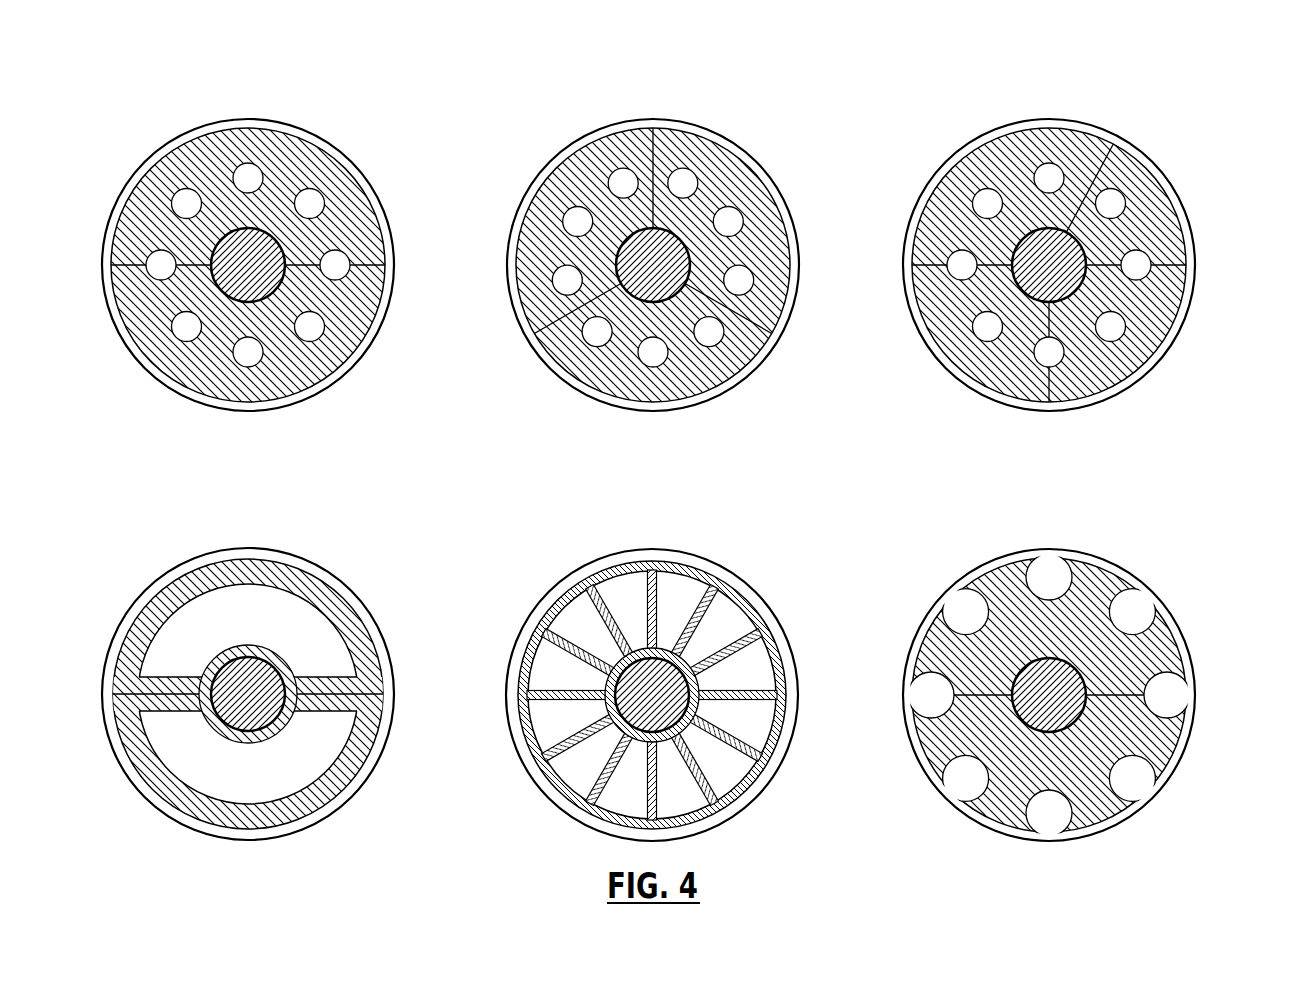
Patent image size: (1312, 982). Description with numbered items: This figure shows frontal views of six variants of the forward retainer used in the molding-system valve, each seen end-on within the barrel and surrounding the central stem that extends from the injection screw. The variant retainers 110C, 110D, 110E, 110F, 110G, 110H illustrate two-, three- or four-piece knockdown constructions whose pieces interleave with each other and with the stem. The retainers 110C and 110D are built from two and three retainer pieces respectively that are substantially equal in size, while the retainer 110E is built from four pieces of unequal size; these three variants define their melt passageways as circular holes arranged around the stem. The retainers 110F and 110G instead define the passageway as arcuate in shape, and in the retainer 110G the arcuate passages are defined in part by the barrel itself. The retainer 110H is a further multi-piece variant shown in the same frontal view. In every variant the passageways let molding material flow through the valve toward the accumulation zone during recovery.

The retainer 110C is at (298, 231).
The retainer 110D is at (703, 231).
The retainer 110E is at (1099, 231).
The retainer 110F is at (298, 660).
The retainer 110G is at (704, 661).
The retainer 110H is at (1099, 661).